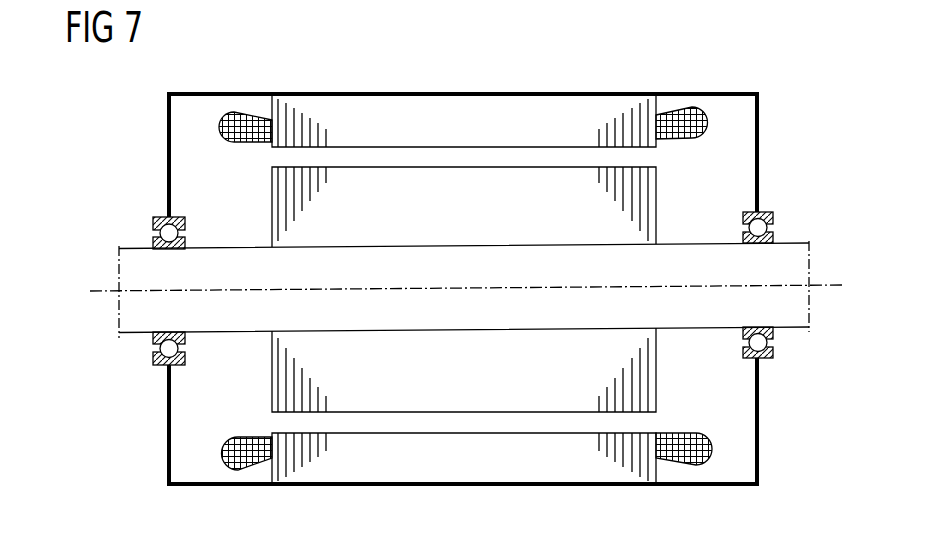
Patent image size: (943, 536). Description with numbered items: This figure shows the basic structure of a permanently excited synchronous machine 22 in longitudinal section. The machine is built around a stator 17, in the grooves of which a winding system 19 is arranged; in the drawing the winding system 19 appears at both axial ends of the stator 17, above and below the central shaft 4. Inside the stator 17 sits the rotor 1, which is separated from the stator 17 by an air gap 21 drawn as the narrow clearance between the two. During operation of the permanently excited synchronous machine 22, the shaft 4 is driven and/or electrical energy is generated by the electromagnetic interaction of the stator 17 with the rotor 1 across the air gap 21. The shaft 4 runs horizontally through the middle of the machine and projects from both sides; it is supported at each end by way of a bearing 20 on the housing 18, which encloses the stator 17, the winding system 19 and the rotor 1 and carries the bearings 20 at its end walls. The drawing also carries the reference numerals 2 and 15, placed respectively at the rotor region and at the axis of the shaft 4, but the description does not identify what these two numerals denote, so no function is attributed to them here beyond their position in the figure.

The rotor 1 is at (672, 351).
The rotor 2 is at (425, 187).
The shaft 4 is at (133, 325).
The axis of rotation 15 is at (821, 282).
The stator 17 is at (546, 110).
The housing 18 is at (726, 92).
The winding system 19 is at (243, 112).
The bearing 20 is at (153, 219).
The air gap 21 is at (485, 153).
The permanently excited synchronous machine 22 is at (619, 68).